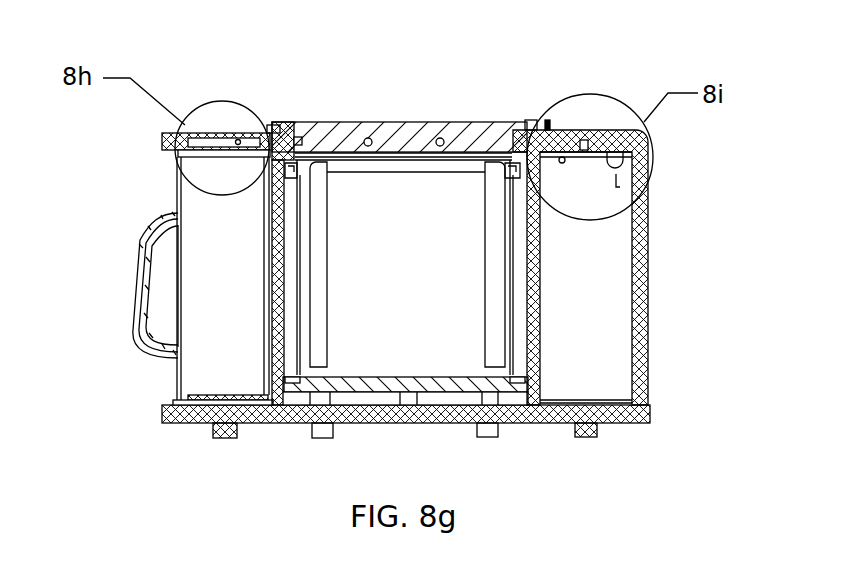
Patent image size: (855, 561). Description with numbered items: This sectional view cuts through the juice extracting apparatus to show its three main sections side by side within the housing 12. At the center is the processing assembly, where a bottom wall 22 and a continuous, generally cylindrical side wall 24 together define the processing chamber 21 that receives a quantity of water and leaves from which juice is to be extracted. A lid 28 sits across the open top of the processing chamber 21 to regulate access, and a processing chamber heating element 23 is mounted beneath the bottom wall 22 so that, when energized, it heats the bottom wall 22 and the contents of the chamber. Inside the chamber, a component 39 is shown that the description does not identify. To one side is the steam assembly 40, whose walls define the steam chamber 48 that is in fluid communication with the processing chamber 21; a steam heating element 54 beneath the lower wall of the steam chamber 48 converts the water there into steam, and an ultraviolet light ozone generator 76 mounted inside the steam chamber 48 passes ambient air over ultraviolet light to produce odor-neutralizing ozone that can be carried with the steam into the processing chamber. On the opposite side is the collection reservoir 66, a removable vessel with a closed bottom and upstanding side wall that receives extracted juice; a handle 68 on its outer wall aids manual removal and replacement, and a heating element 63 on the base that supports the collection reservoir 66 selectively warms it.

The housing 12 is at (277, 436).
The processing chamber 21 is at (403, 185).
The bottom wall 22 is at (378, 376).
The processing chamber heating element 23 is at (387, 391).
The side wall 24 is at (445, 266).
The lid 28 is at (430, 128).
The side panel 39 is at (312, 320).
The steam assembly 40 is at (668, 217).
The steam chamber 48 is at (617, 271).
The steam heating element 54 is at (598, 400).
The heating element 63 is at (188, 408).
The collection reservoir 66 is at (178, 181).
The handle 68 is at (135, 302).
The ultraviolet light ozone generator 76 is at (620, 187).